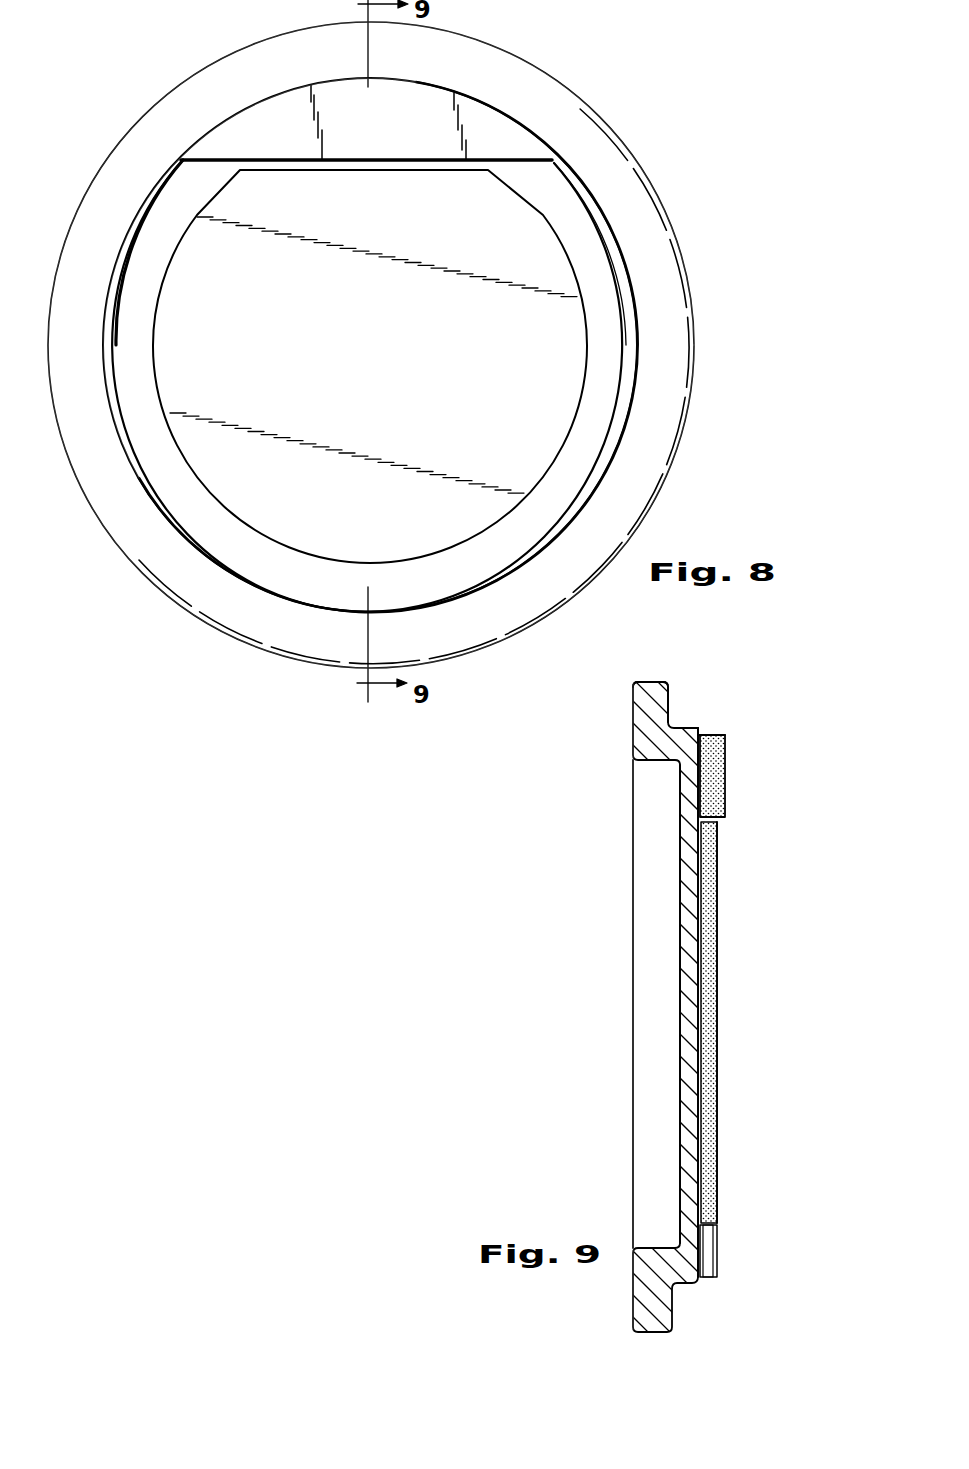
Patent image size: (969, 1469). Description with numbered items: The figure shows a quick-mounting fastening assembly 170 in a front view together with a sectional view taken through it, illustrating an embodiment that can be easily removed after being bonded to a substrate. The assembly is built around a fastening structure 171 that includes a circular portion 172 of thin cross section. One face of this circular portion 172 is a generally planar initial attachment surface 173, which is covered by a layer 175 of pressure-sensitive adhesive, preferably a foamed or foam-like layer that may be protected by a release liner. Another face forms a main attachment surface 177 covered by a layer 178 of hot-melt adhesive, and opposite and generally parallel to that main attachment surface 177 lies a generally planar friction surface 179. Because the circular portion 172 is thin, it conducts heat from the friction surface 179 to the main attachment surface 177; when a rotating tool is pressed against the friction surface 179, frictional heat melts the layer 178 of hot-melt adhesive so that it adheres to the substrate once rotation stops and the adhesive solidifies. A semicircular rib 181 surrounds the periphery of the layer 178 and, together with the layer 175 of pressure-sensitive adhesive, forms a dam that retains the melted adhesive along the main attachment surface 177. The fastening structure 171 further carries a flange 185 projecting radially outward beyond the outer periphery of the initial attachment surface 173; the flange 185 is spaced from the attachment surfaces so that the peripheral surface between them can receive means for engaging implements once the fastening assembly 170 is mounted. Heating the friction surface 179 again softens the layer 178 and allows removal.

In FIG. 8, the quick-mounting fastening assembly 170 is at (133, 62).
In FIG. 9, the quick-mounting fastening assembly 170 is at (596, 870).
In FIG. 8, the fastening structure 171 is at (287, 668).
In FIG. 9, the fastening structure 171 is at (688, 722).
In FIG. 8, the circular portion 172 is at (148, 200).
In FIG. 9, the circular portion 172 is at (690, 965).
In FIG. 9, the initial attachment surface 173 is at (724, 752).
In FIG. 8, the layer of pressure-sensitive adhesive 175 is at (492, 131).
In FIG. 9, the layer of pressure-sensitive adhesive 175 is at (727, 768).
In FIG. 8, the main attachment surface 177 is at (595, 373).
In FIG. 9, the main attachment surface 177 is at (712, 1185).
In FIG. 8, the layer of hot-melt adhesive 178 is at (525, 247).
In FIG. 9, the layer of hot-melt adhesive 178 is at (710, 995).
In FIG. 9, the friction surface 179 is at (683, 911).
In FIG. 8, the semicircular rib 181 is at (237, 577).
In FIG. 9, the semicircular rib 181 is at (707, 1270).
In FIG. 8, the flange 185 is at (114, 498).
In FIG. 9, the flange 185 is at (653, 685).